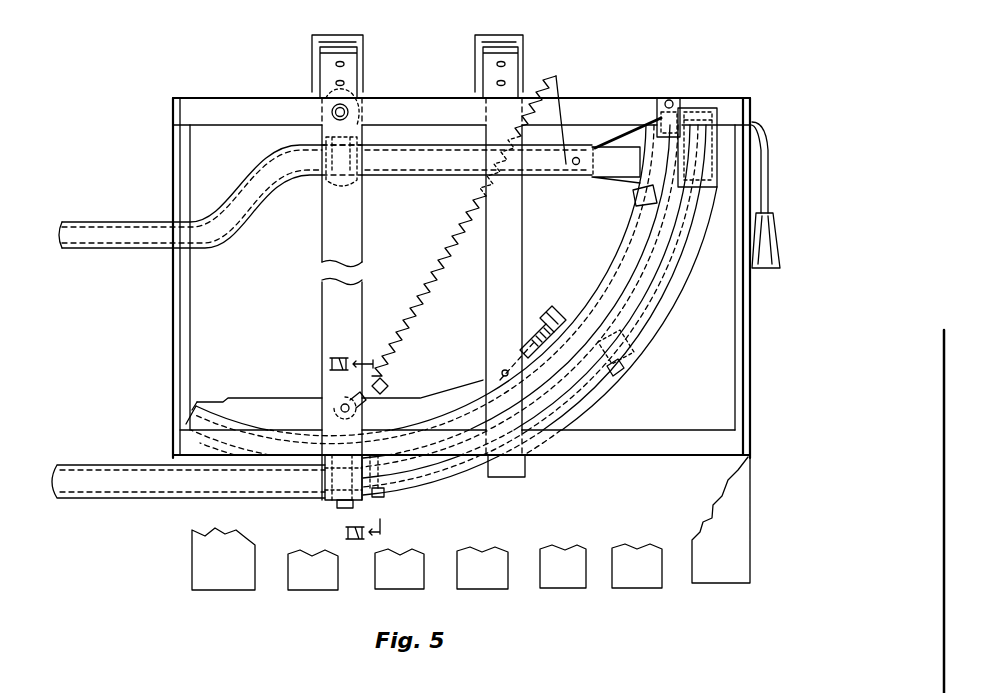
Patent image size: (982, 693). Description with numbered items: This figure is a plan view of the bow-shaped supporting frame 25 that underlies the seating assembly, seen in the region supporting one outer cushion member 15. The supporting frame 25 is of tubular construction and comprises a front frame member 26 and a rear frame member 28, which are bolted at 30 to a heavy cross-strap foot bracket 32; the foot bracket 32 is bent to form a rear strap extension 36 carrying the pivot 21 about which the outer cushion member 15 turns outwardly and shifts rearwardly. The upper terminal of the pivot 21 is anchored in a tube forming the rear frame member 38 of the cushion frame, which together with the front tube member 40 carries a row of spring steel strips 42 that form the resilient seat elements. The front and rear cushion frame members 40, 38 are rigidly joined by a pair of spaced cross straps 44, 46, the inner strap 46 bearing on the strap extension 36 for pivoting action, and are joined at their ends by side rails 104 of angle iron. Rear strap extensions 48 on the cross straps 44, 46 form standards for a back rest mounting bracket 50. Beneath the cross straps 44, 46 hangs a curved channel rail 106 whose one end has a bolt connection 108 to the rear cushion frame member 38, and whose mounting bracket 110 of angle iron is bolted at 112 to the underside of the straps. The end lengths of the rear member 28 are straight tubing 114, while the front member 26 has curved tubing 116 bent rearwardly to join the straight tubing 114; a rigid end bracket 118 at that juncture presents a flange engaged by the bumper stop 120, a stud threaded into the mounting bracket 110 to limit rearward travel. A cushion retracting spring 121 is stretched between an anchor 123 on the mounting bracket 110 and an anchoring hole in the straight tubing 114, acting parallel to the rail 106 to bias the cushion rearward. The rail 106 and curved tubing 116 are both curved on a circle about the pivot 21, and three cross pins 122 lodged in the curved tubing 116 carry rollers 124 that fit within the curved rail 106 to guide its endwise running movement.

The outer cushion member 15 is at (742, 571).
The pivot 21 is at (330, 112).
The supporting frame 25 is at (443, 481).
The front frame member 26 is at (158, 498).
The rear frame member 28 is at (205, 218).
The bolt 30 is at (357, 142).
The foot bracket 32 is at (362, 272).
The rear strap extension 36 is at (360, 101).
The rear frame member 38 is at (548, 99).
The front tube member 40 is at (672, 457).
The spring steel strips 42 is at (488, 590).
The cross strap 44 is at (522, 268).
The cross strap 46 is at (362, 312).
The rear strap extension 48 is at (327, 58).
The back rest mounting bracket 50 is at (364, 48).
The side rail 104 is at (185, 333).
The curved channel rail 106 is at (465, 403).
The bolt connection 108 is at (669, 98).
The mounting bracket 110 is at (468, 380).
The bolt 112 is at (502, 352).
The straight tubing 114 is at (413, 176).
The curved tubing 116 is at (583, 397).
The end bracket 118 is at (628, 130).
The bumper stop 120 is at (563, 312).
The cushion retracting spring 121 is at (470, 260).
The cross pin 122 is at (620, 373).
The anchor 123 is at (338, 404).
The roller 124 is at (690, 112).